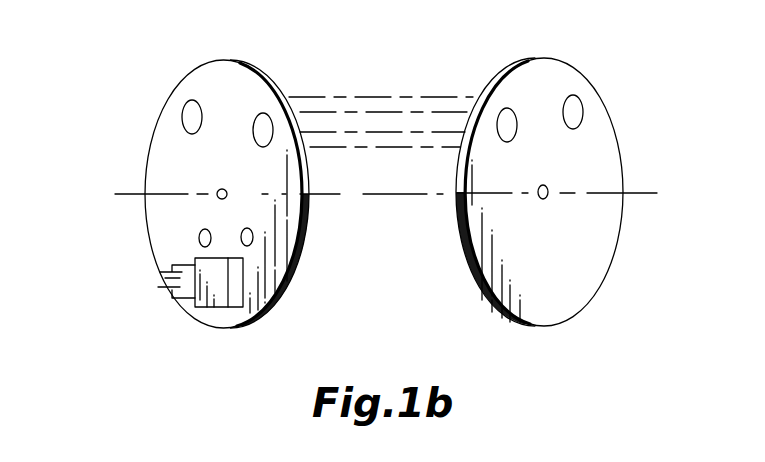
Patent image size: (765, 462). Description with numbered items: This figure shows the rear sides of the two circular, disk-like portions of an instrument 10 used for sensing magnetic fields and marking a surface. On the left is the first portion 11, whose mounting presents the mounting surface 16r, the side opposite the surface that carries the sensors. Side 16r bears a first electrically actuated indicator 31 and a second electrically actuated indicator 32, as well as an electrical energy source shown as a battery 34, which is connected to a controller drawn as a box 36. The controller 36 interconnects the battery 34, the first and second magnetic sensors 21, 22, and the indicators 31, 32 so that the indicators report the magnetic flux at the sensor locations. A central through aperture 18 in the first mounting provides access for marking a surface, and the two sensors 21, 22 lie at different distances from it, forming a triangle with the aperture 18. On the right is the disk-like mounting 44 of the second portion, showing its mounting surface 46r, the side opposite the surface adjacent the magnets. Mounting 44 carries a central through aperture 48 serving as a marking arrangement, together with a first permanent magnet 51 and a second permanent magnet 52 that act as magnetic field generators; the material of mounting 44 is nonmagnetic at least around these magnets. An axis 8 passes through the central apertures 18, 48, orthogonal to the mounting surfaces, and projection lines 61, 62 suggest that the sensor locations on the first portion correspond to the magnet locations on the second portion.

The axis 8 is at (351, 194).
The instrument 10 is at (350, 322).
The first portion 11 is at (131, 239).
The mounting surface 16r is at (168, 156).
The central through aperture 18 is at (221, 189).
The first magnetic sensor 21 is at (264, 114).
The second magnetic sensor 22 is at (182, 113).
The first electrically actuated indicator 31 is at (202, 230).
The second electrically actuated indicator 32 is at (247, 228).
The battery 34 is at (158, 287).
The controller 36 is at (222, 307).
The disk-like mounting 44 is at (617, 245).
The mounting surface 46r is at (605, 161).
The central through aperture 48 is at (543, 200).
The permanent magnet 51 is at (512, 141).
The second permanent magnet 52 is at (583, 112).
The projection line 61 is at (378, 147).
The projection line 62 is at (385, 97).